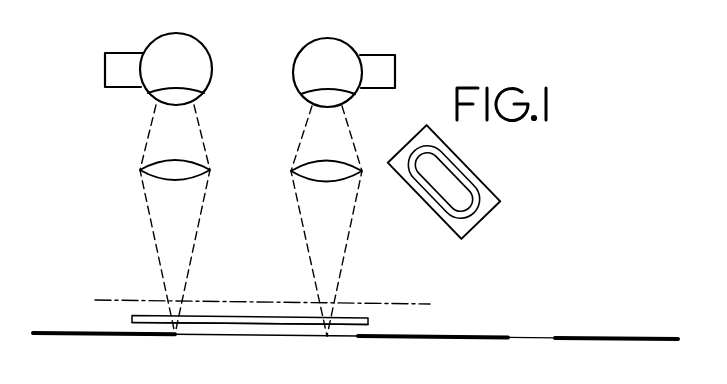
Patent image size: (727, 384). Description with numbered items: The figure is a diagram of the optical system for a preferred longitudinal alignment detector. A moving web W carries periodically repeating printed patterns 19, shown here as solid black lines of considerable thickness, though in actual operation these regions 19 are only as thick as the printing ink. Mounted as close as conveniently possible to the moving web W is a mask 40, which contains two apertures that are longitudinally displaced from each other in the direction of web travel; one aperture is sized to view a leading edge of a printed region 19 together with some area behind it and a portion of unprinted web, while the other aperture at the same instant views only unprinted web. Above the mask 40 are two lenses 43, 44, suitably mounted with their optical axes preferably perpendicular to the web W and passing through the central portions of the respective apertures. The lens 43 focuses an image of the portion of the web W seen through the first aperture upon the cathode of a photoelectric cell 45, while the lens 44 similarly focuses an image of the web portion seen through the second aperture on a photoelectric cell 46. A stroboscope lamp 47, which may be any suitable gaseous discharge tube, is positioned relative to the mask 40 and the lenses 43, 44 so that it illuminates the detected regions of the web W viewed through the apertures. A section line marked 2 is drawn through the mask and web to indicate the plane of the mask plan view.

The photoelectric cell 45 is at (155, 57).
The photoelectric cell 46 is at (323, 58).
The lens 43 is at (163, 170).
The lens 44 is at (342, 177).
The stroboscope lamp 47 is at (443, 182).
The section line 2- 2 is at (118, 318).
The web W is at (197, 336).
The mask 40 is at (263, 323).
The periodically repeating patterns 19 is at (63, 336).